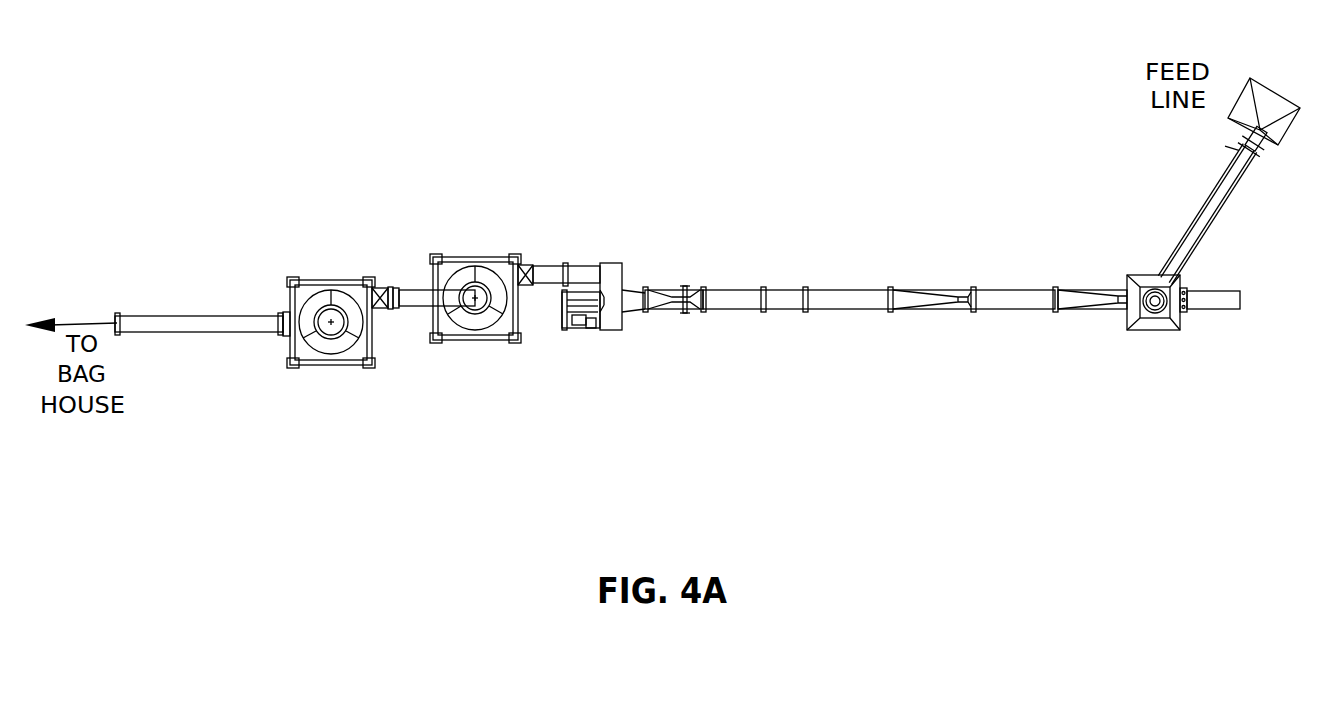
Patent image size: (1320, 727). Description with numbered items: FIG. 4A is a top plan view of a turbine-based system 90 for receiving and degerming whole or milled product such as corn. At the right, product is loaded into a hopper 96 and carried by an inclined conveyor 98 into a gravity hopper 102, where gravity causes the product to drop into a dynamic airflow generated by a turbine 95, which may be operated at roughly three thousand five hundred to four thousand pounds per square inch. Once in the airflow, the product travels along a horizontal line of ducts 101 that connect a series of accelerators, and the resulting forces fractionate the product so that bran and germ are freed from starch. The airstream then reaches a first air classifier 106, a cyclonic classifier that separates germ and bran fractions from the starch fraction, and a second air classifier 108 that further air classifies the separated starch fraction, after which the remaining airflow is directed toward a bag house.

The system 90 is at (343, 108).
The turbine 95 is at (612, 263).
The hopper 96 is at (1273, 90).
The conveyor 98 is at (1212, 217).
The ducts 101 is at (733, 290).
The gravity hopper 102 is at (1152, 332).
The first air classifier 106 is at (472, 257).
The second air classifier 108 is at (332, 280).